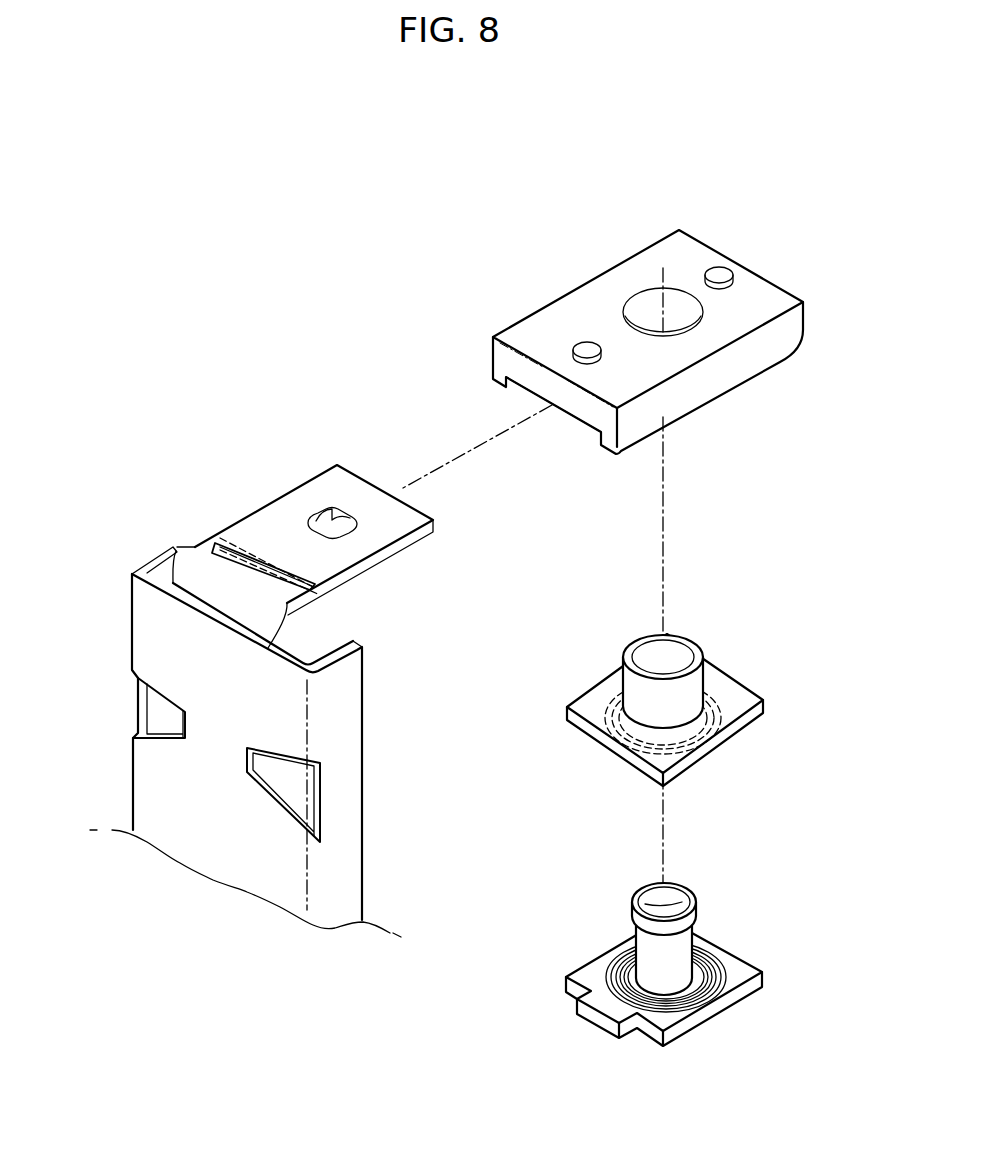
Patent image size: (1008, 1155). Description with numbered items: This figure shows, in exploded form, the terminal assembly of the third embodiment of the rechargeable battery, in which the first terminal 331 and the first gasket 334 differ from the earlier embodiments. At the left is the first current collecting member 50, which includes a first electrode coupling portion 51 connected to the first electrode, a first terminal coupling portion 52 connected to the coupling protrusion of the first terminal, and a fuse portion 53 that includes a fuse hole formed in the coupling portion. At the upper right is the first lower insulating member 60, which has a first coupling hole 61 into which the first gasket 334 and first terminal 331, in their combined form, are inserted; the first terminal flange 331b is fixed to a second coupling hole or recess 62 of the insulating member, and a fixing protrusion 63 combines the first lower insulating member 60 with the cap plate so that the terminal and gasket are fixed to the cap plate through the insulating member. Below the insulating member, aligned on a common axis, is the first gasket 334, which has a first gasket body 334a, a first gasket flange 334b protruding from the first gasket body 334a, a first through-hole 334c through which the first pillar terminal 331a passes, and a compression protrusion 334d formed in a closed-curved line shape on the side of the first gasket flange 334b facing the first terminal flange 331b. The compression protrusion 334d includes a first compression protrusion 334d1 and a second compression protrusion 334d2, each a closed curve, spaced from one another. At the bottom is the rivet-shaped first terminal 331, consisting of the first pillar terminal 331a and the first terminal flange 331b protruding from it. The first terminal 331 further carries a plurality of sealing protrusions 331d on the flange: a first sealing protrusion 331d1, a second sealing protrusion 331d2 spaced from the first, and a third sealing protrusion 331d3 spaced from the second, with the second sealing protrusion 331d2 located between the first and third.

The first current collecting member 50 is at (130, 557).
The first electrode coupling portion 51 is at (207, 852).
The first terminal coupling portion 52 is at (307, 493).
The fuse portion 53 is at (207, 555).
The first lower insulating member 60 is at (663, 222).
The first coupling hole 61 is at (641, 318).
The second coupling hole or recess 62 is at (536, 397).
The fixing protrusion 63 is at (720, 271).
The first gasket 334 is at (703, 628).
The first gasket body 334a is at (633, 698).
The first gasket flange 334b is at (598, 717).
The first through-hole 334c is at (663, 672).
The compression protrusion 334d is at (488, 775).
The first compression protrusion 334d1 is at (608, 733).
The second compression protrusion 334d2 is at (635, 752).
The first terminal 331 is at (710, 882).
The first pillar terminal 331a is at (687, 948).
The first terminal flange 331b is at (735, 973).
The sealing protrusions 331d is at (466, 933).
The first sealing protrusion 331d1 is at (620, 968).
The second sealing protrusion 331d2 is at (617, 978).
The third sealing protrusion 331d3 is at (617, 998).